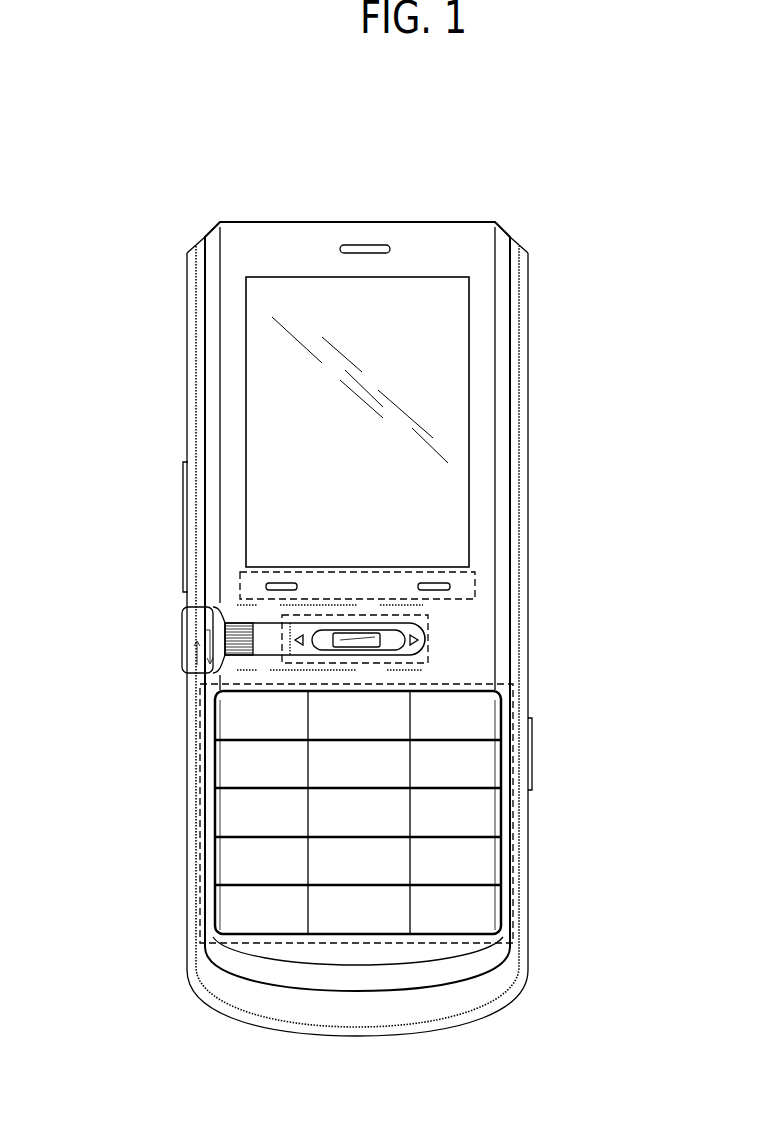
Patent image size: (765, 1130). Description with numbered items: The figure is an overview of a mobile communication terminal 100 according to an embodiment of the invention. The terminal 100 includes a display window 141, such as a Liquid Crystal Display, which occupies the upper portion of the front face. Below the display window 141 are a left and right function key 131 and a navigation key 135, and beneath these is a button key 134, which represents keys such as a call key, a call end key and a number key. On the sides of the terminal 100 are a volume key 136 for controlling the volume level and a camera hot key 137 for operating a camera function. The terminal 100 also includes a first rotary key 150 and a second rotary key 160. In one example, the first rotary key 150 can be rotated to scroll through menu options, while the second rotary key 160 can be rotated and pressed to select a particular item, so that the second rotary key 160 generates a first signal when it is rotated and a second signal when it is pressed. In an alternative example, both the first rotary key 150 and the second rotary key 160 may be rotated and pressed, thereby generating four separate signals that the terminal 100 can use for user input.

The mobile communication terminal 100 is at (440, 220).
The display window 141 is at (469, 417).
The left and right function key 131 is at (475, 580).
The navigation key 135 is at (428, 630).
The volume key 136 is at (183, 522).
The camera hot key 137 is at (532, 757).
The first rotary key 150 is at (183, 635).
The second rotary key 160 is at (360, 643).
The button key 134 is at (200, 766).